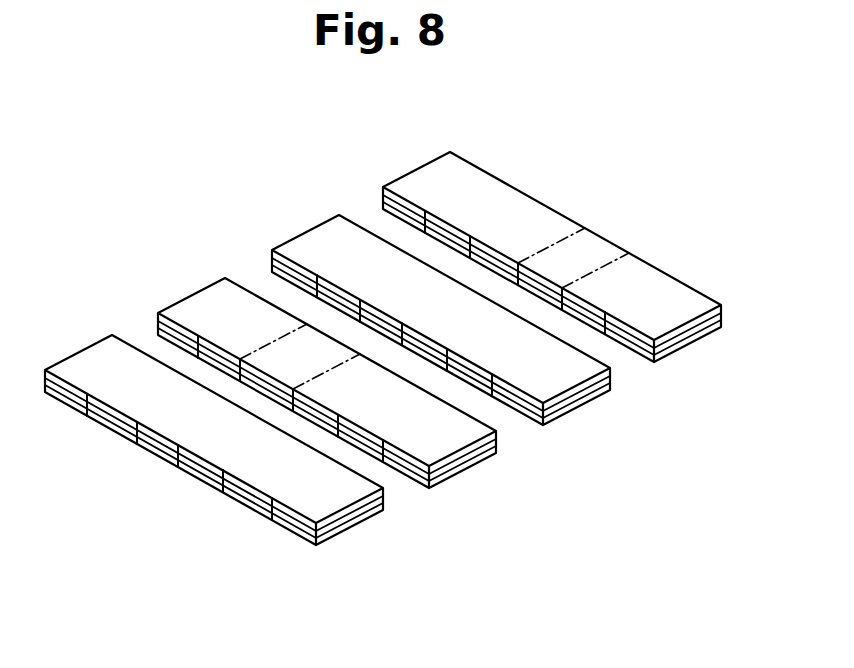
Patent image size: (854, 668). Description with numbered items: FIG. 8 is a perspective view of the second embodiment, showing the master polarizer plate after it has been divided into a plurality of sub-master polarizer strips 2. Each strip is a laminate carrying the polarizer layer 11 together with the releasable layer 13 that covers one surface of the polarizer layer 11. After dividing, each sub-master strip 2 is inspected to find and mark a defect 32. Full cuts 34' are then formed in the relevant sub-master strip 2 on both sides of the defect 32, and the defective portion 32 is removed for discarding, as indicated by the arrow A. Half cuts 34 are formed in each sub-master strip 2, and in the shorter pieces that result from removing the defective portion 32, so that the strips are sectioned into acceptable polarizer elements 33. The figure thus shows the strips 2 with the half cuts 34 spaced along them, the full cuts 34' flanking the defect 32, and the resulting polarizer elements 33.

The sub-master polarizer strip 2 is at (374, 534).
The polarizer layer 11 is at (378, 203).
The releasable layer 13 is at (420, 183).
The defect 32 is at (257, 392).
The polarizer element 33 is at (193, 480).
The half cut 34 is at (346, 357).
The full cut 34' is at (483, 293).
The arrow A is at (675, 197).